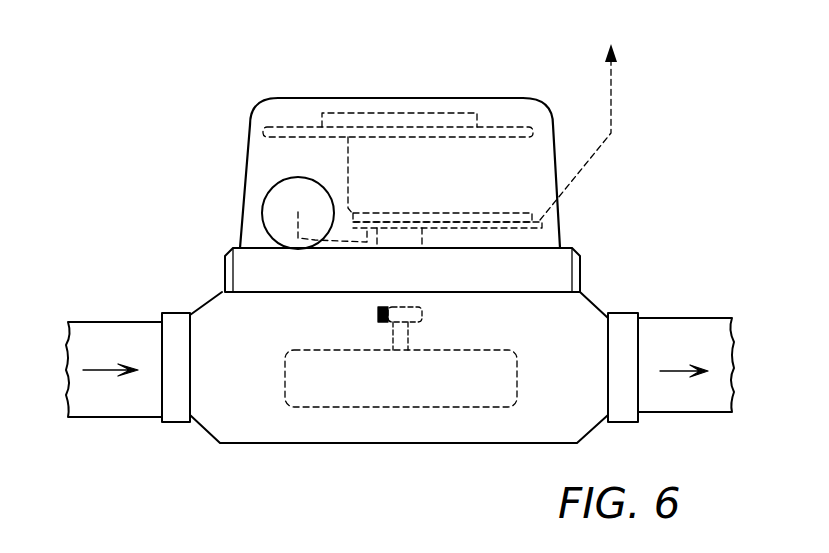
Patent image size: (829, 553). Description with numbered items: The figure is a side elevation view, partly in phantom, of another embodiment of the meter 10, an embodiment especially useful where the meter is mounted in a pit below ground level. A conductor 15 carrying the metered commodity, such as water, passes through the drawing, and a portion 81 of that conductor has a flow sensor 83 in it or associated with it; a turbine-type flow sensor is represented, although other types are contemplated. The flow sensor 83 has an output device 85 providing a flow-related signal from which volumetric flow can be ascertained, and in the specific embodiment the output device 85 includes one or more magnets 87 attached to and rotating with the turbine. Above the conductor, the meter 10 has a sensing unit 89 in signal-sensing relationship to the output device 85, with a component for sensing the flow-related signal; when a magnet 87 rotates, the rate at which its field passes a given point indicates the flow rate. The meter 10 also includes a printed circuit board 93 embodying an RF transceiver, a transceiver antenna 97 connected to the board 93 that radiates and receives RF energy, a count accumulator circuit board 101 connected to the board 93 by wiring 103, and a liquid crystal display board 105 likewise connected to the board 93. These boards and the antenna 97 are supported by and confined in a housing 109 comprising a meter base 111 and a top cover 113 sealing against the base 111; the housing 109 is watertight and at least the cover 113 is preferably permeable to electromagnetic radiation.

The meter 10 is at (170, 225).
The conductor 15 is at (102, 322).
The portion of the conductor 81 is at (228, 432).
The flow sensor 83 is at (358, 405).
The output device 85 is at (407, 322).
The magnet 87 is at (378, 313).
The sensing unit 89 is at (395, 245).
The printed circuit board 93 is at (540, 222).
The transceiver antenna 97 is at (398, 214).
The count accumulator circuit board 101 is at (278, 127).
The wiring 103 is at (350, 165).
The liquid crystal display board 105 is at (340, 117).
The housing 109 is at (230, 215).
The meter base 111 is at (574, 250).
The top cover 113 is at (460, 98).